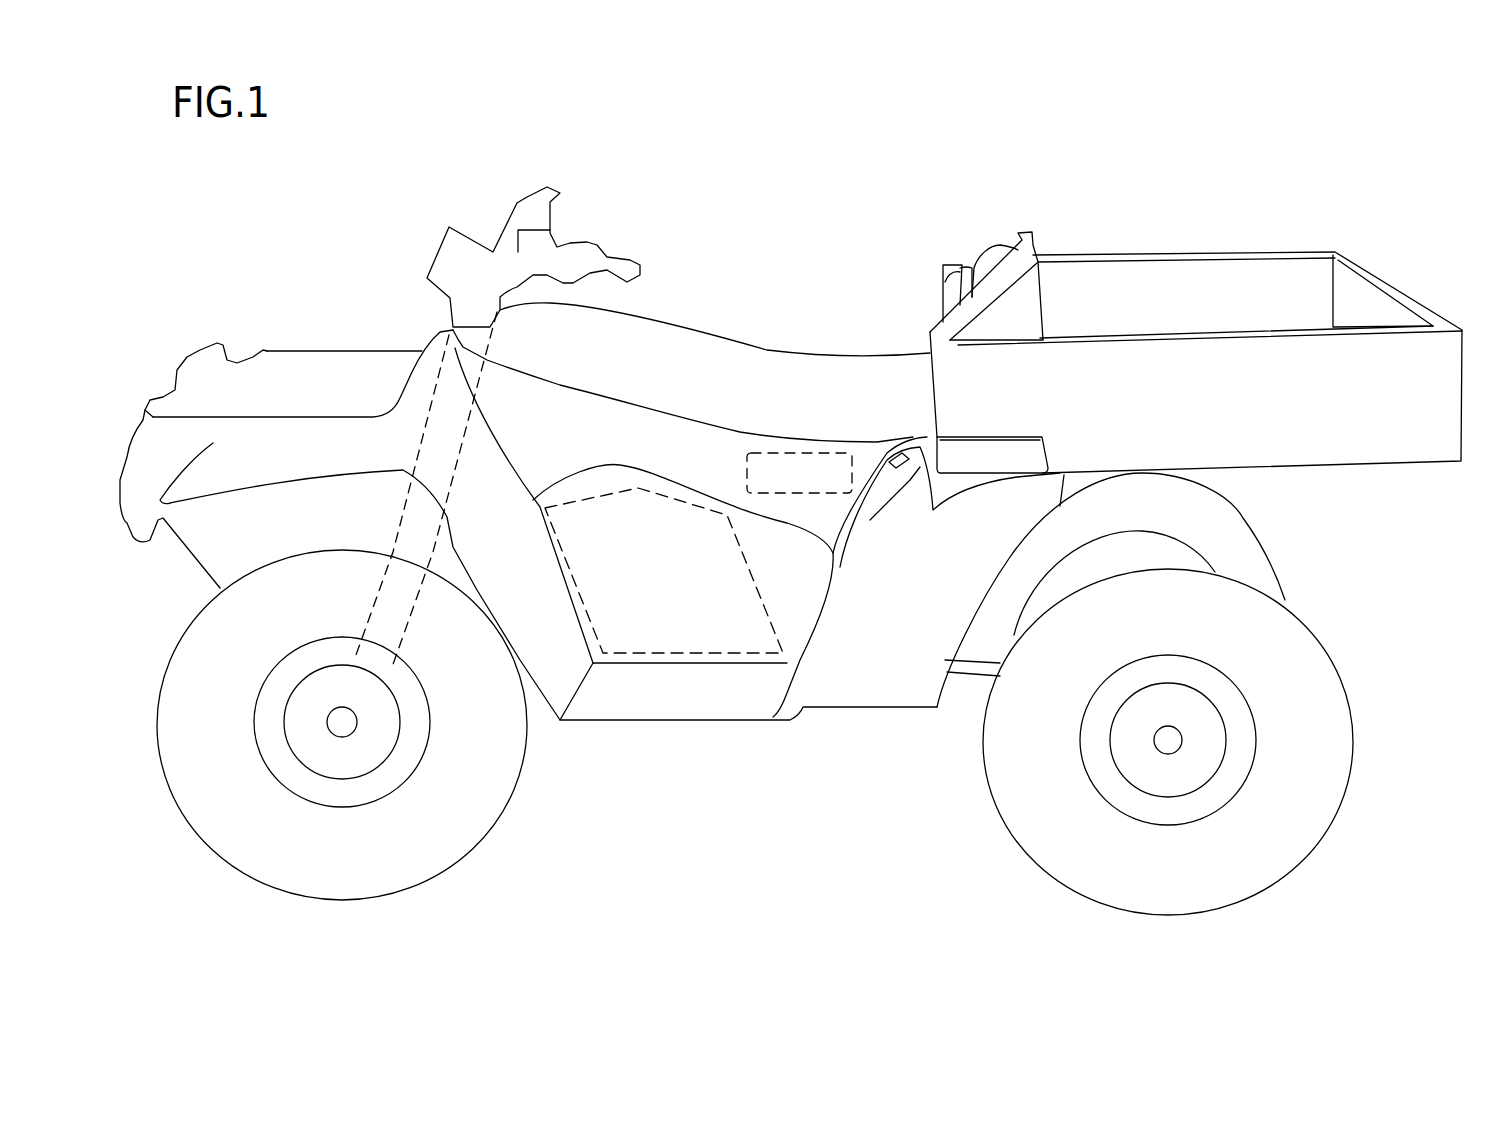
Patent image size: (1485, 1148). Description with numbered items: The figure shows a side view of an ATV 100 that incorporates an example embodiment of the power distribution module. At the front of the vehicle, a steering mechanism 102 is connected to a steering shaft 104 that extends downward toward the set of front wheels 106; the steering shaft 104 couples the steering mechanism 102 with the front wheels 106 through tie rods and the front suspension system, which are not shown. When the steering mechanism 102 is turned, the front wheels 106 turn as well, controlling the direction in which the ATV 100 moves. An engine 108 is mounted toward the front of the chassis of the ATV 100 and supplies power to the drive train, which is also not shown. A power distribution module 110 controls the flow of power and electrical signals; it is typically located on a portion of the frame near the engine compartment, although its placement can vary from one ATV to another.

The ATV 100 is at (1127, 192).
The steering mechanism 102 is at (617, 260).
The steering shaft 104 is at (418, 452).
The front wheels 106 is at (473, 812).
The engine 108 is at (750, 627).
The power distribution module 110 is at (787, 453).